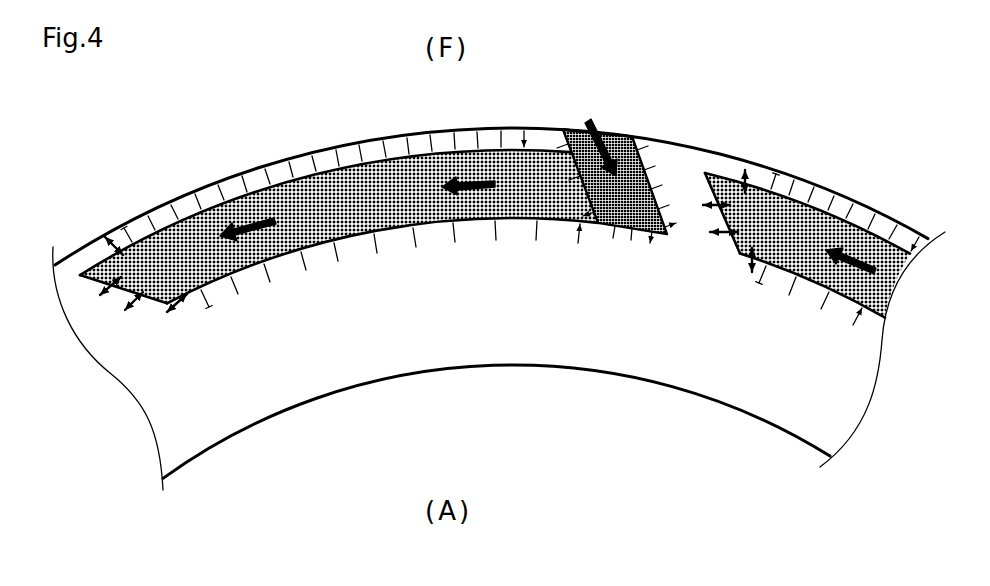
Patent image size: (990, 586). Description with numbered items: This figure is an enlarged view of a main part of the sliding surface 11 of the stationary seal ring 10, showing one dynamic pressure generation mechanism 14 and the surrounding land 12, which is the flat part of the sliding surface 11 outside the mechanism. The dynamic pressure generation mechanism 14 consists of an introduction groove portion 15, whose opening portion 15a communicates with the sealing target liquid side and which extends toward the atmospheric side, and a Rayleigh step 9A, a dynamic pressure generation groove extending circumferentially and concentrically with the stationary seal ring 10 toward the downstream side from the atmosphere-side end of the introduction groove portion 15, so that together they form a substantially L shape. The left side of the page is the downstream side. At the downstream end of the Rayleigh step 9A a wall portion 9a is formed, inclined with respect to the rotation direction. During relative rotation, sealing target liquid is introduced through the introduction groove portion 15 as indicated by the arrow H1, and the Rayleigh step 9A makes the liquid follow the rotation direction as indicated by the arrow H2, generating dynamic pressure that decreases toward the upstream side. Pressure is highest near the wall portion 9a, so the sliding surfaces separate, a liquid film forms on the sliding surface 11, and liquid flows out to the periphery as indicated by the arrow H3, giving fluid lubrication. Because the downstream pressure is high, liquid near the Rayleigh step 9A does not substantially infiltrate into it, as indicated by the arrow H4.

The Rayleigh step 9A is at (300, 208).
The wall portion 9a is at (152, 297).
The stationary seal ring 10 is at (666, 127).
The sliding surface 11 is at (383, 362).
The land 12 is at (305, 370).
The dynamic pressure generation mechanism 14 is at (598, 243).
The introduction groove portion 15 is at (652, 238).
The opening portion 15a is at (578, 124).
The arrow H1 is at (607, 118).
The arrow H2 is at (478, 193).
The arrow H3 is at (113, 282).
The arrow H4 is at (373, 156).